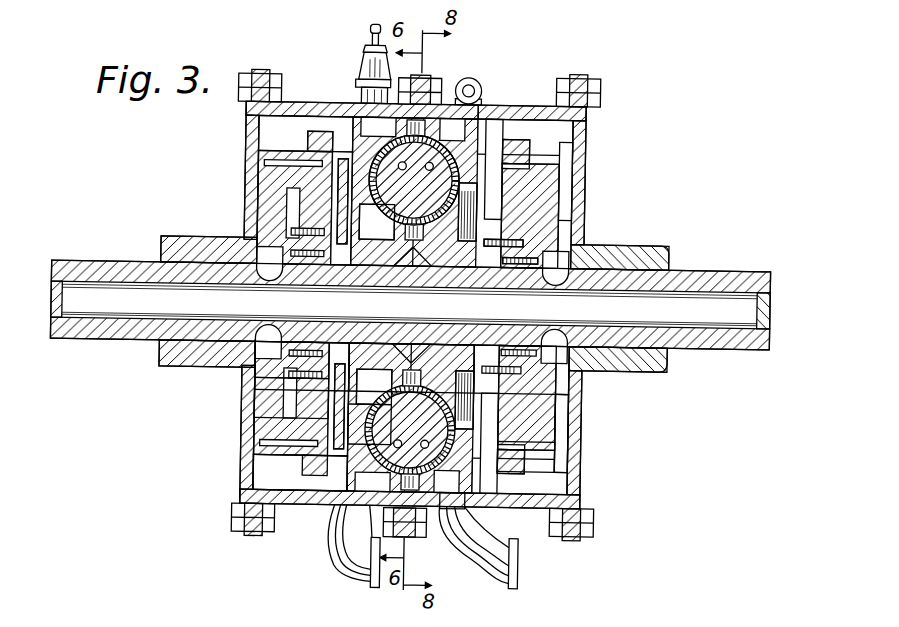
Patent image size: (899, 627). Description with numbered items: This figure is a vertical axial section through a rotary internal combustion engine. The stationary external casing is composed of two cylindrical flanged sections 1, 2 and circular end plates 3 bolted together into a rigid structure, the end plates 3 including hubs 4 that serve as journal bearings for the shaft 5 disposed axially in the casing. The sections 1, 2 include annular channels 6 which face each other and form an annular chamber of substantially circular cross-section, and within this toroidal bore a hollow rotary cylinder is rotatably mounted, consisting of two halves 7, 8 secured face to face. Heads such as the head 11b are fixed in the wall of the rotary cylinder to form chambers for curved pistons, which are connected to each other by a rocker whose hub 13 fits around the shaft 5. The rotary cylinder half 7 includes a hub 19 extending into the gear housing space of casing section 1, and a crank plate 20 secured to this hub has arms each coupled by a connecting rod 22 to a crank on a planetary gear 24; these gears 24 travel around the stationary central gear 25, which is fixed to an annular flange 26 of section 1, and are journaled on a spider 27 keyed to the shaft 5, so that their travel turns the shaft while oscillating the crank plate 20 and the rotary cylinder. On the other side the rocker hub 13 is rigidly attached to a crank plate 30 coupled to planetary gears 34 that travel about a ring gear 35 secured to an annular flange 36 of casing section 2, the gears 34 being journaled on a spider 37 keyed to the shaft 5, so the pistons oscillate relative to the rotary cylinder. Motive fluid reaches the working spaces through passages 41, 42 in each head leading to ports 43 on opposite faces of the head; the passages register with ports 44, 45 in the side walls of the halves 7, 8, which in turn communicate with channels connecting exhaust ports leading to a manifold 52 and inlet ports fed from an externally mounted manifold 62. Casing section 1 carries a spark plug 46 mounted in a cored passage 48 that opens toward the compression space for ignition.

The casing section 1 is at (300, 104).
The casing section 2 is at (521, 106).
The end plate 3 is at (583, 147).
The hub 4 is at (186, 240).
The shaft 5 is at (96, 266).
The annular channel 6 is at (473, 208).
The rotary cylinder half 7 is at (362, 478).
The rotary cylinder half 8 is at (455, 167).
The head 11b is at (416, 342).
The rocker hub 13 is at (470, 352).
The hub 19 is at (380, 352).
The crank plate 20 is at (288, 377).
The connecting rod 22 is at (300, 472).
The planetary gear 24 is at (338, 500).
The central gear 25 is at (357, 407).
The annular flange 26 is at (342, 352).
The spider 27 is at (270, 399).
The crank plate 30 is at (556, 392).
The planetary gear 34 is at (560, 213).
The ring gear 35 is at (535, 227).
The annular flange 36 is at (532, 445).
The spider 37 is at (548, 406).
The passage 41 is at (333, 149).
The passage 42 is at (500, 158).
The port 43 is at (449, 510).
The port 44 is at (372, 158).
The port 45 is at (492, 140).
The spark plug 46 is at (363, 43).
The cored passage 48 is at (357, 100).
The exhaust manifold 52 is at (504, 573).
The inlet manifold 62 is at (470, 79).